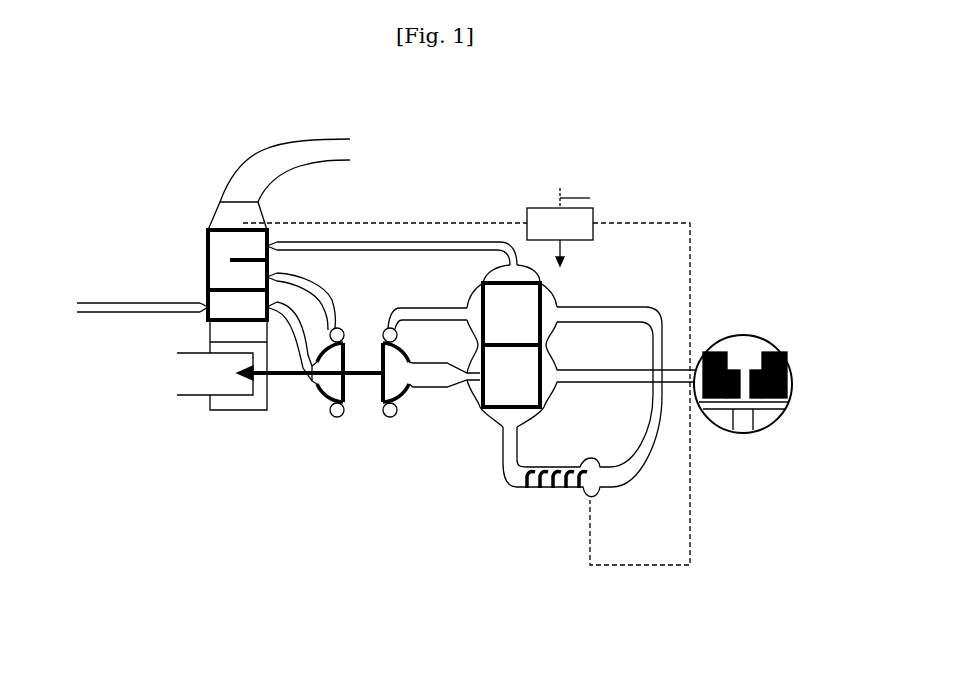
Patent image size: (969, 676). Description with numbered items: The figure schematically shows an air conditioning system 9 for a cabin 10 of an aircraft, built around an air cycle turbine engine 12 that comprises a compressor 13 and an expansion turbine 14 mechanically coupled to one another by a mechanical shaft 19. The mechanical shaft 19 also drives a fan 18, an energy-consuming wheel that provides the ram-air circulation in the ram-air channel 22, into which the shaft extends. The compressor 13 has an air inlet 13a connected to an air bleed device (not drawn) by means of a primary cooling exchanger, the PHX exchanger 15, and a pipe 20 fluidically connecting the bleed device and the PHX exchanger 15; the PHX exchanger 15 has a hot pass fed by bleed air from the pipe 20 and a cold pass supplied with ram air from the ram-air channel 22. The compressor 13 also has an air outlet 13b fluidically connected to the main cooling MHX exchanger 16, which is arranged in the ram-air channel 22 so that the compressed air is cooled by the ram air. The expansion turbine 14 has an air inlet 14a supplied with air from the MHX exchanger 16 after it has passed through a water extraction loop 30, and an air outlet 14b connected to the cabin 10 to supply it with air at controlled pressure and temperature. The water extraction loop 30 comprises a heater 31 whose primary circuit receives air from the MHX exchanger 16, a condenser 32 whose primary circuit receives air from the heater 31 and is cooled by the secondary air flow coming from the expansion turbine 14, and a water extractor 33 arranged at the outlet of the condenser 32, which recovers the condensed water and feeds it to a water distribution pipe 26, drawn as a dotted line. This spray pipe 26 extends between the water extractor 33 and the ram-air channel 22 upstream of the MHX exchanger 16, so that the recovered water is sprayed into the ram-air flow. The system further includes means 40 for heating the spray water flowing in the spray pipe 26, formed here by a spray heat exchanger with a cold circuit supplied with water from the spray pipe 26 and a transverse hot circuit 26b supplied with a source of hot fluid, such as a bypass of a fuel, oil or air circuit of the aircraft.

The air conditioning system 9 is at (188, 532).
The cabin 10 is at (773, 432).
The air cycle turbine engine 12 is at (354, 381).
The compressor 13 is at (327, 395).
The air inlet 13a is at (303, 400).
The air outlet 13b is at (347, 325).
The expansion turbine 14 is at (402, 393).
The air inlet 14a is at (388, 324).
The air outlet 14b is at (412, 393).
The PHX exchanger 15 is at (210, 302).
The MHX exchanger 16 is at (207, 230).
The fan 18 is at (217, 377).
The mechanical shaft 19 is at (360, 378).
The pipe 20 is at (168, 302).
The ram-air channel 22 is at (287, 143).
The water distribution pipe 26 is at (663, 563).
The hot circuit 26b is at (590, 198).
The water extraction loop 30 is at (508, 362).
The heater 31 is at (553, 333).
The condenser 32 is at (550, 398).
The water extractor 33 is at (547, 482).
The means for heating the spray water 40 is at (536, 208).